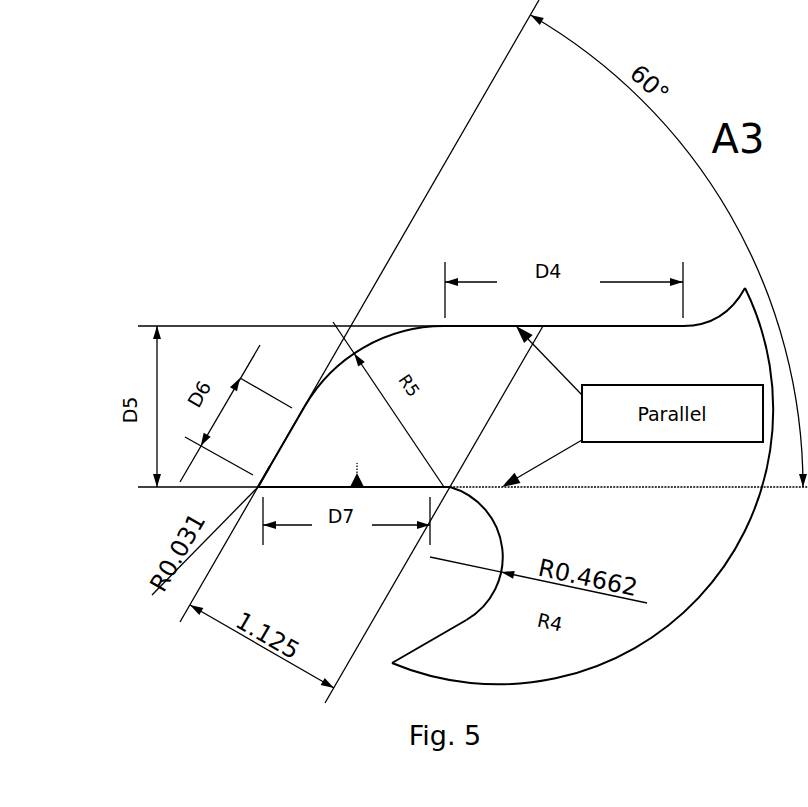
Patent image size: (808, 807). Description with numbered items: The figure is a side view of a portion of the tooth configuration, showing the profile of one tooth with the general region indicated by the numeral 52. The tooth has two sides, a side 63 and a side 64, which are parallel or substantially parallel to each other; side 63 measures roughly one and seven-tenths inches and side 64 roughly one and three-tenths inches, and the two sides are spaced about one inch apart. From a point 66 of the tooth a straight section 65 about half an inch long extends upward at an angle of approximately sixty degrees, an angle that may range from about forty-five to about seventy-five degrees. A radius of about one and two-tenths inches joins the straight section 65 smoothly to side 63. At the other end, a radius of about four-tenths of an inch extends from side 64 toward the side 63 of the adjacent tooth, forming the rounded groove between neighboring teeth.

The cutting insert profile 52 is at (266, 232).
The side 63 is at (608, 336).
The side 64 is at (374, 475).
The straight section 65 is at (297, 440).
The point 66 is at (242, 492).